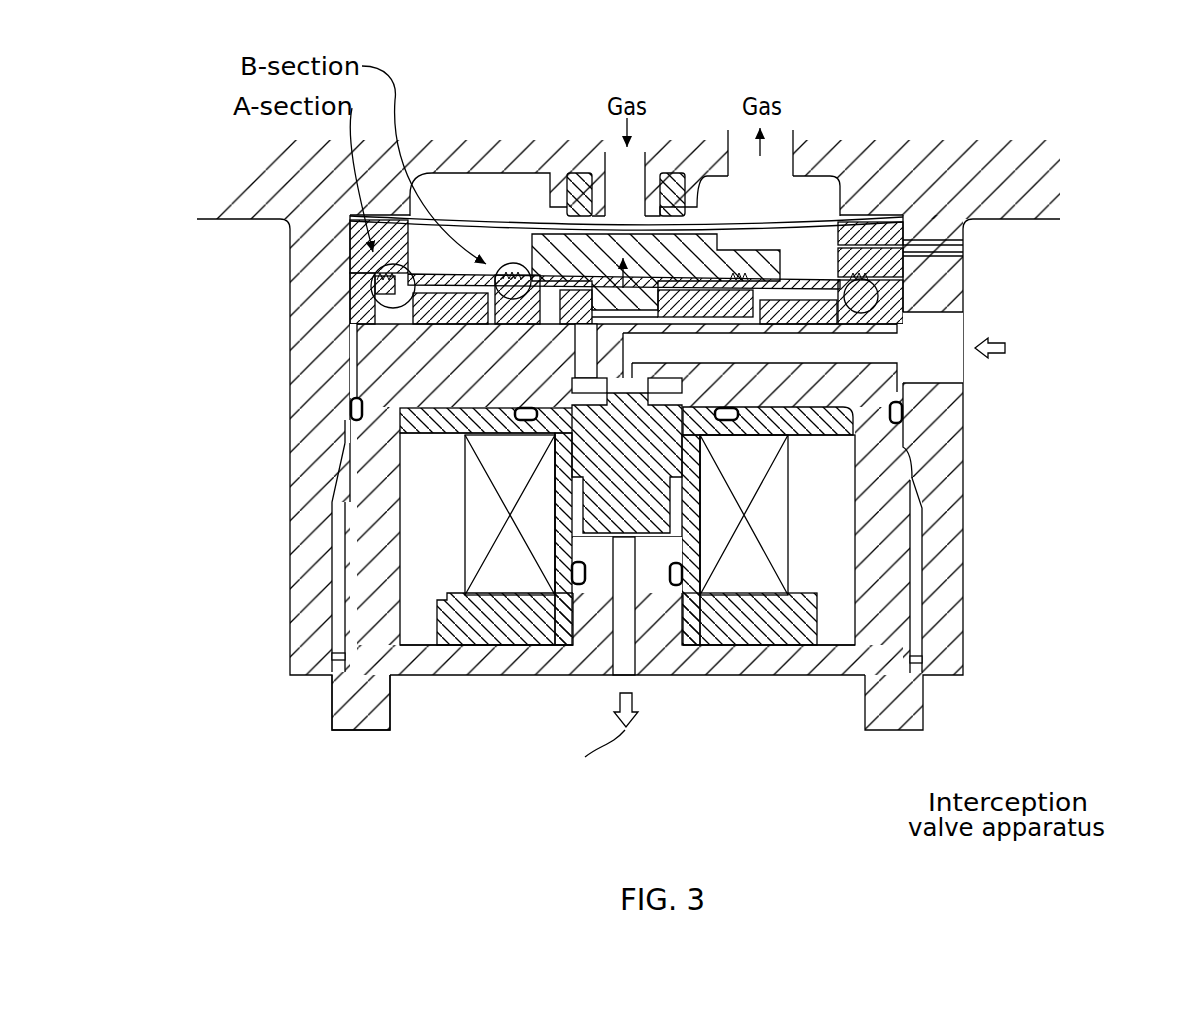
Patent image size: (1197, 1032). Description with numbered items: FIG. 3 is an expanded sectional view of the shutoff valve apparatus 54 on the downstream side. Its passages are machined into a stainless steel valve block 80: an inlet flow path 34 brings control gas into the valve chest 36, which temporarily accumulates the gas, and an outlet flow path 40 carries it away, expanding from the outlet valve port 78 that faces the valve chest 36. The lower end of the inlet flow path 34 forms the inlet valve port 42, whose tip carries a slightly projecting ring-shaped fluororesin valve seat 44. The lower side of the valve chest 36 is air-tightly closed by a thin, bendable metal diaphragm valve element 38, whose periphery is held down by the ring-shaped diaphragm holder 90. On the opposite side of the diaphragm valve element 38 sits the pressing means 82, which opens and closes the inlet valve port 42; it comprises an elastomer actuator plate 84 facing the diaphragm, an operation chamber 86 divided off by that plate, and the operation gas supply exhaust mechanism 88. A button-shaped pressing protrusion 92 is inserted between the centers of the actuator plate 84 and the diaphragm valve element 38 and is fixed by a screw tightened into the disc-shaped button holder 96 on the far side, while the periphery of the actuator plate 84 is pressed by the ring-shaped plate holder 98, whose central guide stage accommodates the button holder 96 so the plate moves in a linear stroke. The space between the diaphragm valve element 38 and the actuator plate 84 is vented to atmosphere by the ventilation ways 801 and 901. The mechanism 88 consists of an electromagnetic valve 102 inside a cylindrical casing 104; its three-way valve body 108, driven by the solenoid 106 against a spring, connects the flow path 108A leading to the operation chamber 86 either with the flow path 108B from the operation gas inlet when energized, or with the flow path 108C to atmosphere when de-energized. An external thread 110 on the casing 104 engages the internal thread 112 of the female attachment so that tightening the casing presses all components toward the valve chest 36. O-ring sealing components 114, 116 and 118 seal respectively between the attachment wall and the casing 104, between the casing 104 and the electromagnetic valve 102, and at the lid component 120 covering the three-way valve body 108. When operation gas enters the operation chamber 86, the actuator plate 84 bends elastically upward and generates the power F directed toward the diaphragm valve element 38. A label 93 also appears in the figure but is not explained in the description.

The shutoff valve apparatus 54 is at (942, 790).
The valve block 80 is at (1036, 184).
The valve chest 36 is at (440, 200).
The outlet flow path 40 is at (777, 158).
The inlet flow path 34 is at (604, 165).
The outlet valve port 78 is at (712, 185).
The valve seat 44 is at (570, 180).
The inlet valve port 42 is at (672, 172).
The diaphragm valve element 38 is at (872, 212).
The diaphragm holder 90 is at (345, 236).
The pressing protrusion 92 is at (908, 240).
The ventilation way 801 is at (935, 250).
The ventilation way 901 is at (960, 264).
The actuator plate 84 is at (842, 284).
The power F is at (720, 240).
The spring member 93 is at (497, 268).
The plate holder 98 is at (905, 306).
The operation chamber 86 is at (600, 322).
The pressing means 82 is at (778, 712).
The button holder 96 is at (587, 362).
The flow path 108B is at (890, 348).
The electromagnetic valve 102 is at (800, 530).
The casing 104 is at (885, 563).
The sealing component 116 is at (730, 423).
The solenoid 106 is at (777, 563).
The three-way valve body 108 is at (603, 511).
The sealing component 118 is at (573, 573).
The flow path 108C is at (605, 672).
The flow path 108A is at (351, 401).
The sealing component 114 is at (903, 413).
The external thread 110 is at (915, 612).
The internal thread 112 is at (960, 613).
The lid component 120 is at (445, 667).
The operation gas supply exhaust mechanism 88 is at (698, 688).